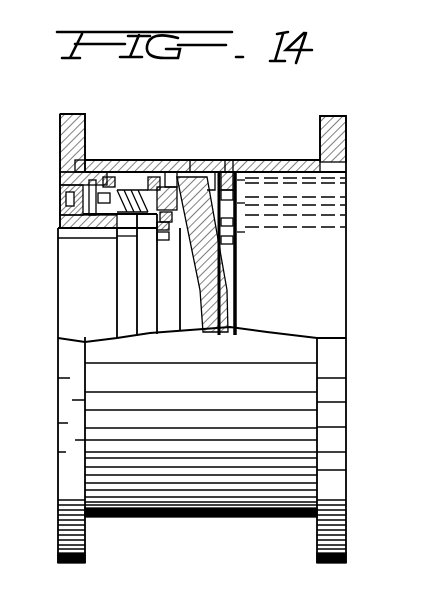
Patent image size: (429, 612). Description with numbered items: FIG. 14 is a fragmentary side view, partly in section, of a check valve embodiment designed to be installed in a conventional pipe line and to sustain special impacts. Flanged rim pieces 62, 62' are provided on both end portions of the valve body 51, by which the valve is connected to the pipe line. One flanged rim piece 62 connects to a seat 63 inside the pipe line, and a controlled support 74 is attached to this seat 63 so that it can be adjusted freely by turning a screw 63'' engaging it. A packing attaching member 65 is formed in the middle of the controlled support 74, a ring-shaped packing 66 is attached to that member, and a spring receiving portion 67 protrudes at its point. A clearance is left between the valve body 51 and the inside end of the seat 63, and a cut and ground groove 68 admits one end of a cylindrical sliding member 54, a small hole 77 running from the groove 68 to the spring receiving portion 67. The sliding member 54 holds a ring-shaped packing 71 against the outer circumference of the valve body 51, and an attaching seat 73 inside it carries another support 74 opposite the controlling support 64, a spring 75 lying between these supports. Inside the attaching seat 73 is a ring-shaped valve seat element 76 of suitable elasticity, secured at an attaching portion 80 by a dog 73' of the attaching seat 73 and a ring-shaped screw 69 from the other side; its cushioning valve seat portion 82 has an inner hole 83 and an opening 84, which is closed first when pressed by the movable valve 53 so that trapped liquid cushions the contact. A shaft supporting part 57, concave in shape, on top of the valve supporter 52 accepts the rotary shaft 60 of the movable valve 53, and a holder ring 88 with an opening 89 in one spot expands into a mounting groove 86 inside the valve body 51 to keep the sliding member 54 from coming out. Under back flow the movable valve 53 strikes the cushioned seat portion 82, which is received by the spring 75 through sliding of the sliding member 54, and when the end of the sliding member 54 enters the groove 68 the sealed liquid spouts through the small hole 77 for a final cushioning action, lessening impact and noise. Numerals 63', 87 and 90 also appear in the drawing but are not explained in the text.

The valve body 51 is at (291, 161).
The valve supporter 52 is at (243, 203).
The movable valve 53 is at (213, 323).
The sliding member 54 is at (197, 160).
The shaft supporting part 57 is at (222, 177).
The rotary shaft 60 is at (233, 222).
The flanged rim piece 62 is at (195, 338).
The flanged rim piece 62' is at (354, 139).
The seat 63 is at (61, 173).
The seal housing lower part 63' is at (68, 247).
The screw 63'' is at (64, 225).
The controlling support 64 is at (78, 238).
The packing attaching member 65 is at (63, 208).
The ring-shaped packing 66 is at (93, 178).
The spring receiving portion 67 is at (102, 237).
The groove 68 is at (120, 190).
The ring-shaped screw 69 is at (157, 226).
The ring-shaped packing 71 is at (163, 180).
The attaching seat 73 is at (187, 148).
The dog 73' is at (224, 144).
The controlled support 74 is at (149, 180).
The spring 75 is at (129, 195).
The valve seat element 76 is at (161, 233).
The small hole 77 is at (107, 185).
The attaching portion 80 is at (157, 237).
The cushioning valve seat portion 82 is at (232, 272).
The inner hole 83 is at (233, 257).
The opening 84 is at (240, 232).
The mounting groove 86 is at (240, 172).
The valve stem 87 is at (238, 172).
The holder ring 88 is at (232, 302).
The opening 89 is at (240, 238).
The chamber 90 is at (240, 183).